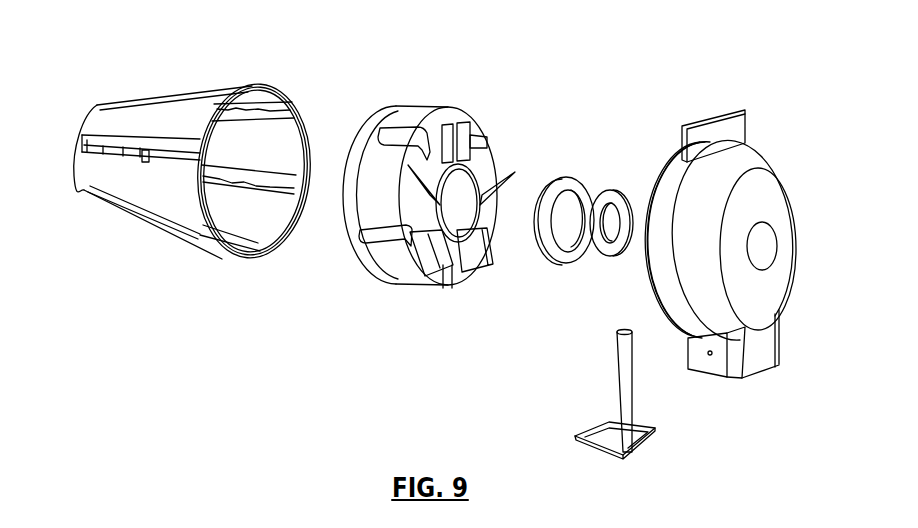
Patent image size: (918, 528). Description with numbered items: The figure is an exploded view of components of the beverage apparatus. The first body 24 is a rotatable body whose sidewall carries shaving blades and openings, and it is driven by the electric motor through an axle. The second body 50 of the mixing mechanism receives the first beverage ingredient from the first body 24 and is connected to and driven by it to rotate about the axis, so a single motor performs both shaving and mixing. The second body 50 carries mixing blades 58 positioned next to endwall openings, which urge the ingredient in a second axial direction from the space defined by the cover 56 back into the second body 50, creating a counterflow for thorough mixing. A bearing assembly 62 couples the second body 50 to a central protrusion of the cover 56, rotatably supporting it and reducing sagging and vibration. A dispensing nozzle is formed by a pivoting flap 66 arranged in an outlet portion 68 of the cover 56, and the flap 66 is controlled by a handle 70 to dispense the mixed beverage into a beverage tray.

The first body 24 is at (117, 97).
The second body 50 is at (373, 113).
The mixing blades 58 is at (477, 266).
The bearing assembly 62 is at (620, 180).
The cover 56 is at (778, 148).
The outlet portion 68 is at (766, 355).
The handle 70 is at (628, 390).
The pivoting flap 66 is at (590, 434).